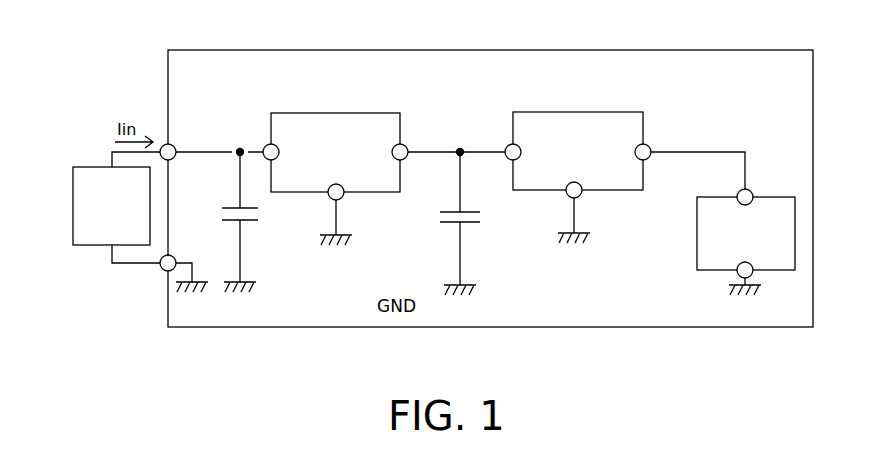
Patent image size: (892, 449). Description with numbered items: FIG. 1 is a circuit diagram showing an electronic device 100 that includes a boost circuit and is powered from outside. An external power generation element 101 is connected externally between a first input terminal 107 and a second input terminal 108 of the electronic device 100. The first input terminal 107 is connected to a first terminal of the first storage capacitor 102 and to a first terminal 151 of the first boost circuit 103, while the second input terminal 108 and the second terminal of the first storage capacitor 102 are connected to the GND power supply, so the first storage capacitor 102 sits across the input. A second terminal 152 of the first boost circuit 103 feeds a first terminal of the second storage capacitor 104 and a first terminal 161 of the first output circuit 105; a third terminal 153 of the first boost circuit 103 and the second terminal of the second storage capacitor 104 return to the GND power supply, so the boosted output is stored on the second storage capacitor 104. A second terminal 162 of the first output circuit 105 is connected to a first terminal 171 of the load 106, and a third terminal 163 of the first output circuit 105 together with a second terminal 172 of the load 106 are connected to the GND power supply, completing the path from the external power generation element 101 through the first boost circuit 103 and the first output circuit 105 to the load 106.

The electronic device 100 is at (466, 50).
The external power generation element 101 is at (95, 166).
The first storage capacitor 102 is at (258, 214).
The first boost circuit 103 is at (325, 113).
The second storage capacitor 104 is at (480, 216).
The first output circuit 105 is at (580, 112).
The load 106 is at (786, 178).
The first input terminal 107 is at (172, 145).
The second input terminal 108 is at (173, 256).
The first terminal 151 is at (263, 145).
The second terminal 152 is at (406, 146).
The third terminal 153 is at (345, 198).
The first terminal 161 is at (510, 145).
The second terminal 162 is at (650, 146).
The third terminal 163 is at (582, 196).
The first terminal 171 is at (738, 192).
The second terminal 172 is at (735, 276).